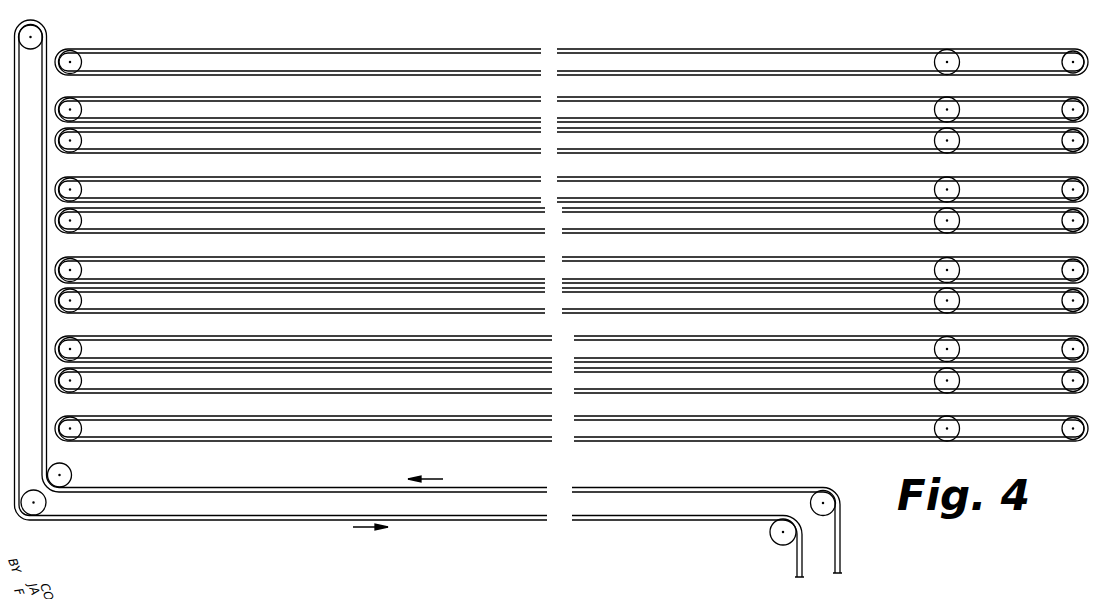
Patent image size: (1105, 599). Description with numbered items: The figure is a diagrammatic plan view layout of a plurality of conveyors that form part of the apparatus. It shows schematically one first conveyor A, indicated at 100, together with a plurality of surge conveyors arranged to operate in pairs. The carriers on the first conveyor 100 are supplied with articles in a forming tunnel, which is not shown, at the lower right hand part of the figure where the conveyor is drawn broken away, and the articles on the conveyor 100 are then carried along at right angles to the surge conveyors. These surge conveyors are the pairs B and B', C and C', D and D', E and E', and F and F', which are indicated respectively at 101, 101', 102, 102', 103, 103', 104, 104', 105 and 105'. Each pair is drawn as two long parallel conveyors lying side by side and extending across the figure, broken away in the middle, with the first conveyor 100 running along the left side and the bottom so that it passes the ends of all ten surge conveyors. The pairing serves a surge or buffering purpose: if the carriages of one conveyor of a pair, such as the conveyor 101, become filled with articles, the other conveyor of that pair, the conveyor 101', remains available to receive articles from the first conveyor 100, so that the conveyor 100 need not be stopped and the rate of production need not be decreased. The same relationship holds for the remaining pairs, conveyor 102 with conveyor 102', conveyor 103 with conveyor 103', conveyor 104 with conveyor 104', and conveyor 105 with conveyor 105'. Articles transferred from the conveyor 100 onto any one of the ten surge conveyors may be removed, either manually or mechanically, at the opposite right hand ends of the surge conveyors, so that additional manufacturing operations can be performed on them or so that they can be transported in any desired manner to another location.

The first conveyor 100 is at (460, 309).
The first conveyor A is at (107, 492).
The surge conveyor 101 is at (571, 443).
The surge conveyor 101' is at (571, 389).
The surge conveyor 102 is at (571, 338).
The surge conveyor 102' is at (571, 309).
The surge conveyor 103 is at (571, 260).
The surge conveyor 103' is at (571, 231).
The surge conveyor 104 is at (571, 179).
The surge conveyor 104' is at (571, 151).
The surge conveyor 105 is at (571, 100).
The surge conveyor 105' is at (571, 57).
The surge conveyor B is at (571, 442).
The surge conveyor B' is at (571, 389).
The surge conveyor C is at (571, 338).
The surge conveyor C' is at (571, 309).
The surge conveyor D is at (571, 261).
The surge conveyor D' is at (571, 231).
The surge conveyor E is at (571, 179).
The surge conveyor E' is at (571, 151).
The surge conveyor F is at (571, 100).
The surge conveyor F' is at (571, 47).